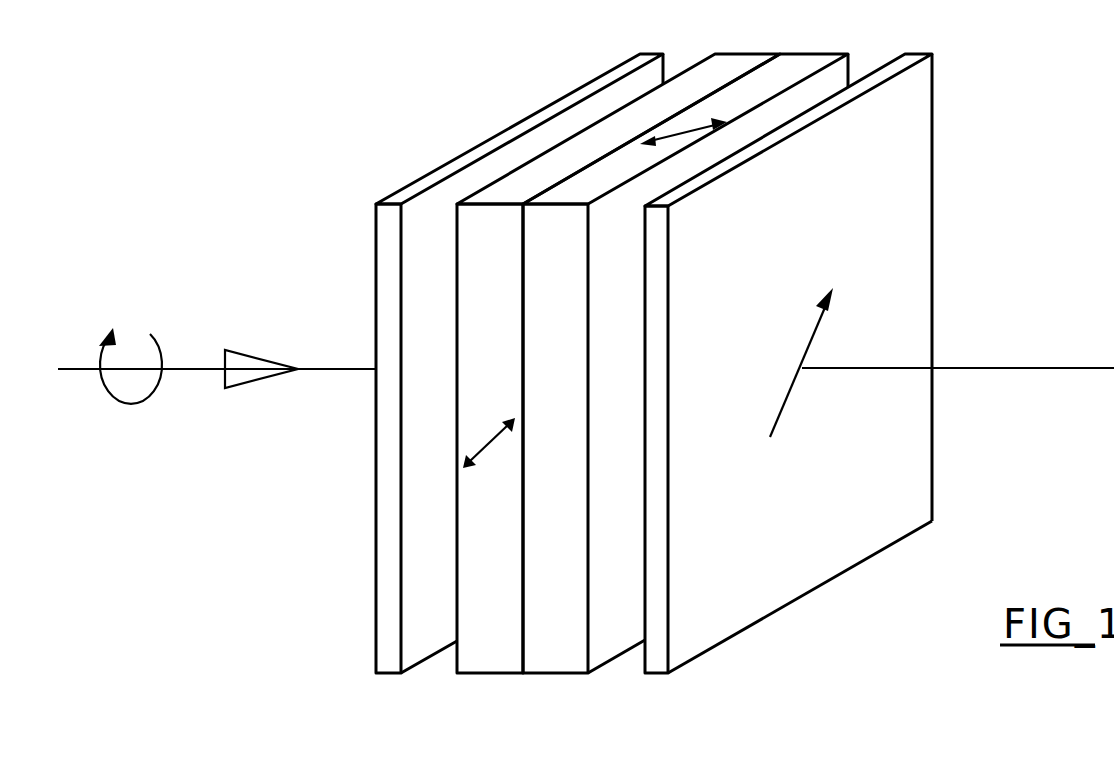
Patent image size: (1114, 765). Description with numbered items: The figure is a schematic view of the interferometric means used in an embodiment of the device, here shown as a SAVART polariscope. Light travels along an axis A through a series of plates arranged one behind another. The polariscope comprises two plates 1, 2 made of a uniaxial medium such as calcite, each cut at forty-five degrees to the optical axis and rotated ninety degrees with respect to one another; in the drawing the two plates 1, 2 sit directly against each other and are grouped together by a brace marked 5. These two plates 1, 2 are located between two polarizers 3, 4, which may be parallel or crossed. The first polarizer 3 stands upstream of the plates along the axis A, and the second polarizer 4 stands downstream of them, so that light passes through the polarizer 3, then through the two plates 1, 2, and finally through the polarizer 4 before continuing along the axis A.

The plate 1 is at (495, 657).
The plate 2 is at (547, 652).
The polarizer 3 is at (392, 657).
The polarizer 4 is at (657, 657).
The plate assembly 5 is at (448, 733).
The optical axis A is at (1072, 367).